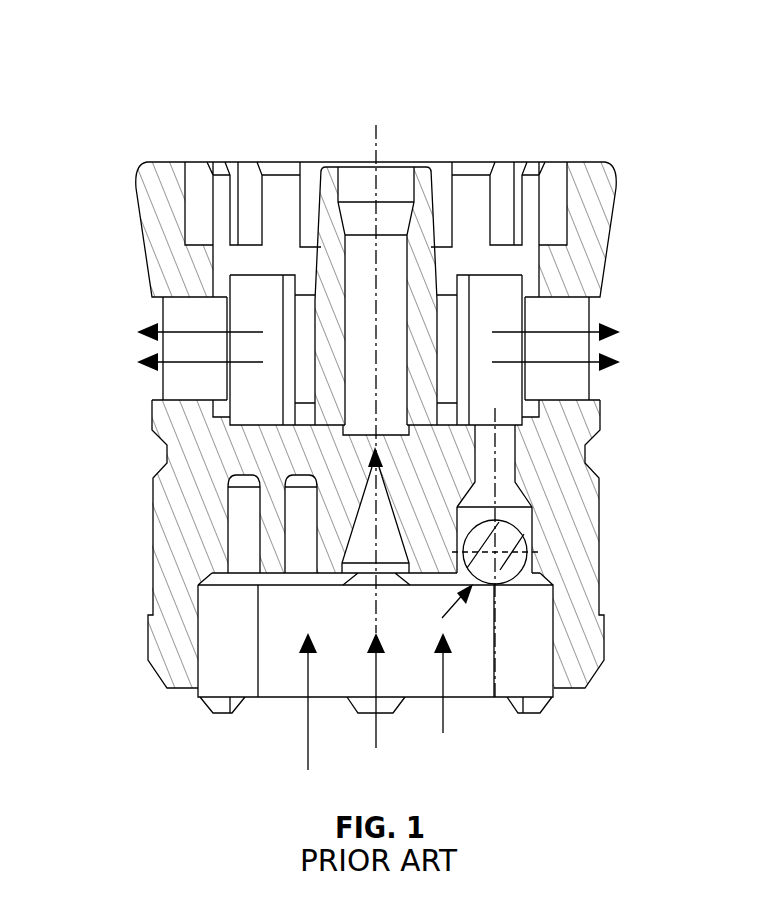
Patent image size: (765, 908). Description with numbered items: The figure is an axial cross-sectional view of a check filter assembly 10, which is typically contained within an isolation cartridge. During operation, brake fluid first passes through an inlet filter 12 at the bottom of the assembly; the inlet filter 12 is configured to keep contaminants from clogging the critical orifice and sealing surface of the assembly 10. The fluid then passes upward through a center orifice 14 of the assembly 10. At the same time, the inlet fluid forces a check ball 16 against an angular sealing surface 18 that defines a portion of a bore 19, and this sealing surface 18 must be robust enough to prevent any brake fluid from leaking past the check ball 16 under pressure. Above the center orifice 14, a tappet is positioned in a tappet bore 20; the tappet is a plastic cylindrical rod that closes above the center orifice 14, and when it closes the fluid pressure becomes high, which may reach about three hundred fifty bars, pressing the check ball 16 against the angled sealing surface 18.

The check filter assembly 10 is at (131, 78).
The inlet filter 12 is at (475, 688).
The center orifice 14 is at (372, 455).
The check ball 16 is at (527, 565).
The angular sealing surface 18 is at (527, 499).
The bore 19 is at (517, 458).
The tappet bore 20 is at (401, 184).